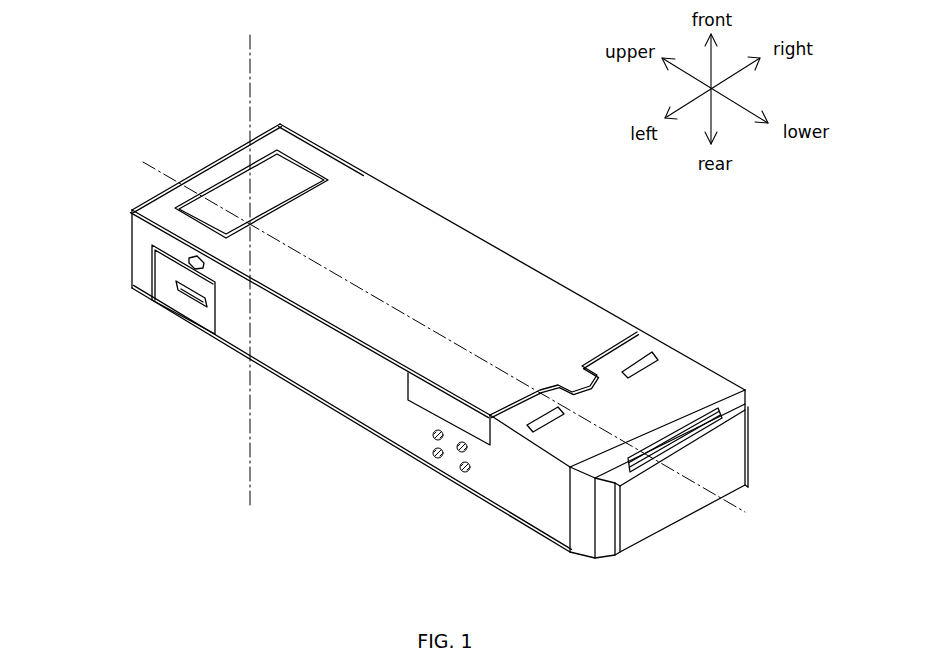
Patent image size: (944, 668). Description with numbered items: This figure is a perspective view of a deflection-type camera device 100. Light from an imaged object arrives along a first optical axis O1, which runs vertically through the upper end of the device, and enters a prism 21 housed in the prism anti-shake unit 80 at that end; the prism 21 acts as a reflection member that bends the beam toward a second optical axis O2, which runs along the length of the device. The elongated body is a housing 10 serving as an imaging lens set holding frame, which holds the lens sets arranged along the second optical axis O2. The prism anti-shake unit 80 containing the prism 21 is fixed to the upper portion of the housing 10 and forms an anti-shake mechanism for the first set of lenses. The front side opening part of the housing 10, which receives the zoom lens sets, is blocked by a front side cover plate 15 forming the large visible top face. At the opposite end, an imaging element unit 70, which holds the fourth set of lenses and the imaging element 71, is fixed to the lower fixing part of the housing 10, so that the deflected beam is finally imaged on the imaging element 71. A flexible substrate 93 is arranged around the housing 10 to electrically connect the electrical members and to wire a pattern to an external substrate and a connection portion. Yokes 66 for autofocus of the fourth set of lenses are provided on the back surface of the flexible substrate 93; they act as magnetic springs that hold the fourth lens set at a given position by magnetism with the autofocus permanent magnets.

The deflection-type camera device 100 is at (438, 254).
The housing 10 is at (428, 398).
The front side cover plate 15 is at (545, 314).
The prism 21 is at (283, 172).
The yokes for autofocus of the fourth set of lenses 66 is at (547, 414).
The imaging element unit 70 is at (582, 537).
The imaging element 71 is at (723, 460).
The prism anti-shake unit 80 is at (143, 232).
The flexible substrate 93 is at (523, 480).
The first optical axis O1 is at (244, 104).
The second optical axis O2 is at (392, 303).